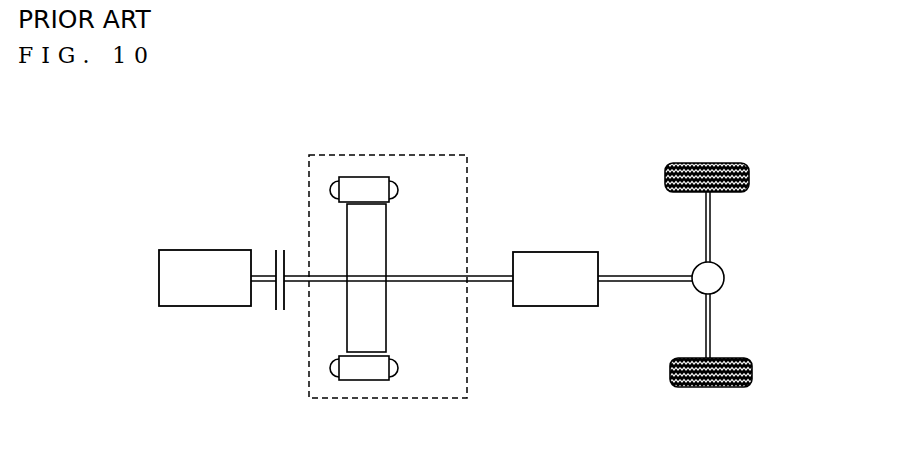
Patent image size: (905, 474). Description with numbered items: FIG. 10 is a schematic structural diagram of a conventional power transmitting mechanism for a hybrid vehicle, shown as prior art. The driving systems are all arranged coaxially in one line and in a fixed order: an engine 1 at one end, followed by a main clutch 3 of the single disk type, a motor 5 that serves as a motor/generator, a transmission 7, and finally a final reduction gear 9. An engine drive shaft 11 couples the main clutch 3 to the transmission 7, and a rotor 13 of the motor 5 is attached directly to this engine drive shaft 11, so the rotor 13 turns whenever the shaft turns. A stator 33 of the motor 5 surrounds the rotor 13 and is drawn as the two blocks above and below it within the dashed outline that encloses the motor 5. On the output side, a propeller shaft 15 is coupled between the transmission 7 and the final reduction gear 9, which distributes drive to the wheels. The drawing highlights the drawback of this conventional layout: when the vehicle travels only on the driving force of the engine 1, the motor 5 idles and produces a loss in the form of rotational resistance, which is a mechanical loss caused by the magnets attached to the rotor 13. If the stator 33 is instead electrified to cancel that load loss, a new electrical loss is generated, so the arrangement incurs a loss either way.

The engine 1 is at (197, 258).
The main clutch 3 is at (280, 256).
The motor 5 is at (373, 176).
The transmission 7 is at (551, 262).
The final reduction gear 9 is at (717, 282).
The engine drive shaft 11 is at (424, 275).
The rotor 13 is at (380, 306).
The propeller shaft 15 is at (627, 275).
The stator 33 is at (367, 378).